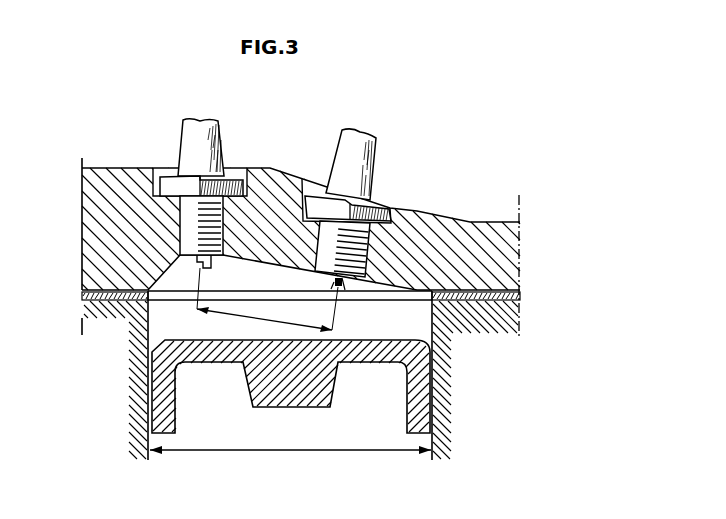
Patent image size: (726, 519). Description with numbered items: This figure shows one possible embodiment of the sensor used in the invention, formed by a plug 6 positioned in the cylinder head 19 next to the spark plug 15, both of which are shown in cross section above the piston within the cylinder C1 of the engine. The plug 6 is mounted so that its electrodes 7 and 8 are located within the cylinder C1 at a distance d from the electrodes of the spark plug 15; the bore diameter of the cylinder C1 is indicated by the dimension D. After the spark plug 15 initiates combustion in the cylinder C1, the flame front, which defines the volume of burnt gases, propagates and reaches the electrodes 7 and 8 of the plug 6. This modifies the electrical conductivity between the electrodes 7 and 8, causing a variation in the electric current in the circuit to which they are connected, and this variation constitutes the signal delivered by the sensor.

The plug 6 is at (344, 154).
The spark plug 15 is at (186, 132).
The cylinder head 19 is at (485, 228).
The electrode 7 is at (334, 287).
The electrode 8 is at (344, 290).
The cylinder C1 is at (443, 383).
The distance d is at (267, 300).
The cylinder bore diameter D is at (290, 441).